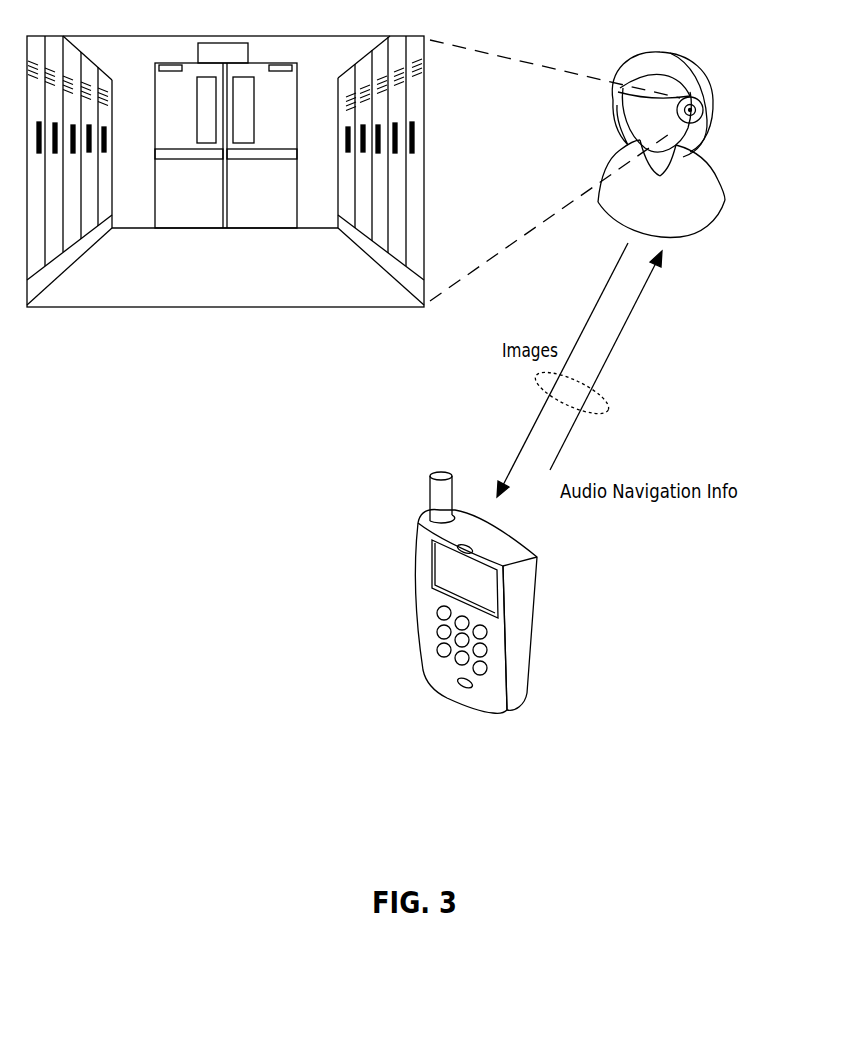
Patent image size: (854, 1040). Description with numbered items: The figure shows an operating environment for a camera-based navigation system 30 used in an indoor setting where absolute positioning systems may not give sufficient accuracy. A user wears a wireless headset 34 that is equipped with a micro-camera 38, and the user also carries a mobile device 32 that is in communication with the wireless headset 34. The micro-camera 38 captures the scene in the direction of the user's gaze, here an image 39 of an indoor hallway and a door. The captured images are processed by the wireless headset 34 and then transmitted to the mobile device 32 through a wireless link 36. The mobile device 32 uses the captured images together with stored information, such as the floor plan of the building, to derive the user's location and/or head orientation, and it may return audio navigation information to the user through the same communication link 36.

The camera-based navigation system 30 is at (752, 338).
The mobile device 32 is at (418, 662).
The wireless headset 34 is at (673, 55).
The wireless link 36 is at (609, 412).
The micro-camera 38 is at (700, 113).
The image 39 is at (228, 36).